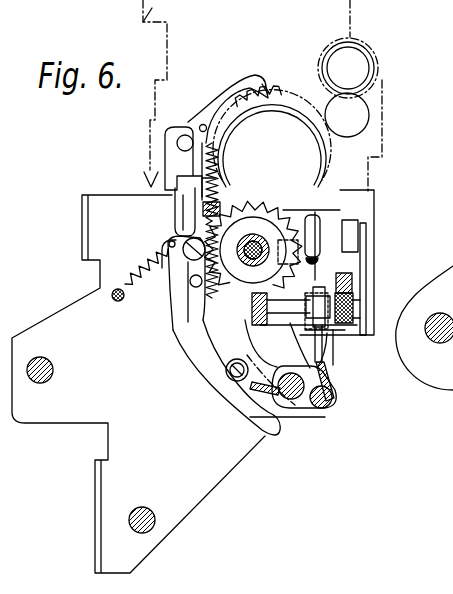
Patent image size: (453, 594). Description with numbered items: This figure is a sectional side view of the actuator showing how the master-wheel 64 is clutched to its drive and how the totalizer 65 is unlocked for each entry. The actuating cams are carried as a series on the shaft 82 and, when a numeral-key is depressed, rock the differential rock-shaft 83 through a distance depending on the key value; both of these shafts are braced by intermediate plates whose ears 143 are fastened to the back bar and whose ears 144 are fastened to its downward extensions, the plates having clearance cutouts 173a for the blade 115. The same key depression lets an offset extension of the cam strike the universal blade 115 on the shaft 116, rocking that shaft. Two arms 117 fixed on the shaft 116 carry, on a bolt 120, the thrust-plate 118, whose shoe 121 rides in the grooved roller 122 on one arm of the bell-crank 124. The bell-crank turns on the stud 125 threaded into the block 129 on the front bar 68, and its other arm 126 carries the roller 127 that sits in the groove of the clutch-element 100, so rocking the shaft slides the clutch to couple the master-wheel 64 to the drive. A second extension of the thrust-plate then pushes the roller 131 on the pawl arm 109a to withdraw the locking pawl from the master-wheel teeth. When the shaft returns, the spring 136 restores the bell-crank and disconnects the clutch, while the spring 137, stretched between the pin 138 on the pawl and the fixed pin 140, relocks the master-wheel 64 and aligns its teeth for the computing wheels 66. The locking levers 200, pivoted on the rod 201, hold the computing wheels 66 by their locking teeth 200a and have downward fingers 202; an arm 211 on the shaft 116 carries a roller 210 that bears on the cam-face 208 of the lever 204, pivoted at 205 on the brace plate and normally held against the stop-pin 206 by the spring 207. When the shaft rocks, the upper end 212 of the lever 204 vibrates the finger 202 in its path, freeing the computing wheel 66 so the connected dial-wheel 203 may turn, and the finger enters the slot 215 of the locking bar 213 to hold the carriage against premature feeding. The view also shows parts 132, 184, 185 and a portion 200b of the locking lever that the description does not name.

The master-wheel 64 is at (270, 204).
The totalizer 65 is at (378, 54).
The computing wheels 66 is at (284, 98).
The front bar 68 is at (355, 328).
The shaft 82 is at (50, 376).
The rock-shaft 83 is at (148, 511).
The clutch-element 100 is at (253, 244).
The arm of the pawl 109a is at (247, 320).
The universal plate or blade 115 is at (244, 437).
The shaft 116 is at (295, 404).
The arms 117 is at (323, 411).
The thrust-plate or lifter 118 is at (332, 392).
The bolt 120 is at (335, 411).
The extension or shoe 121 is at (323, 340).
The roller 122 is at (340, 345).
The bell-crank 124 is at (356, 292).
The stud 125 is at (358, 306).
The arm of the bell-crank 126 is at (324, 236).
The roller 127 is at (260, 266).
The block 129 is at (352, 282).
The roller 131 is at (360, 320).
The slide 132 is at (320, 286).
The spring 136 is at (324, 252).
The spring 137 is at (211, 291).
The pin 138 is at (250, 355).
The fixed pin 140 is at (212, 205).
The ears 143 is at (82, 232).
The ears 144 is at (95, 508).
The clearance cutouts 173a is at (330, 374).
The block 184 is at (348, 221).
The bar 185 is at (366, 248).
The locking levers 200 is at (204, 122).
The locking tooth 200a is at (261, 86).
The pawl spring seat 200b is at (215, 156).
The rod 201 is at (185, 135).
The fingers 202 is at (184, 241).
The dial-wheel 203 is at (384, 86).
The lever 204 is at (182, 316).
The pivot 205 is at (186, 272).
The stop-pin 206 is at (190, 283).
The spring 207 is at (141, 262).
The cam-face 208 is at (234, 407).
The roller 210 is at (228, 383).
The arm 211 is at (300, 347).
The upper end 212 is at (176, 204).
The locking bar 213 is at (218, 206).
The slot 215 is at (170, 244).